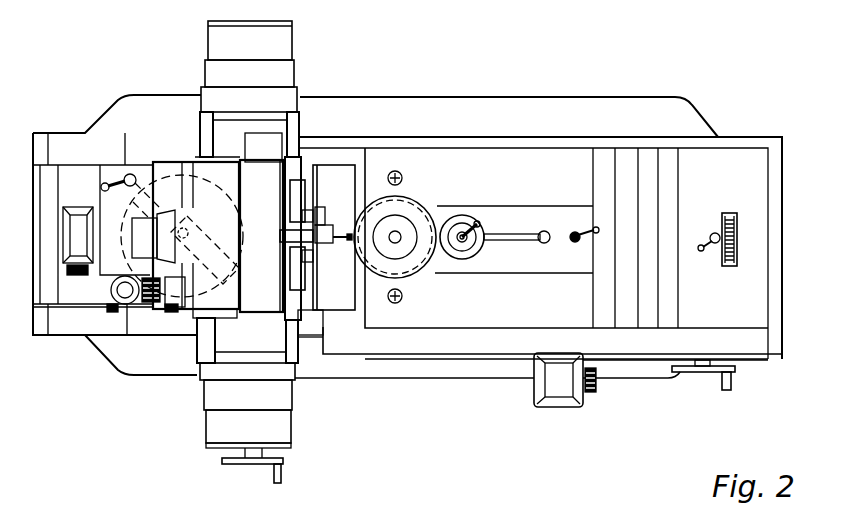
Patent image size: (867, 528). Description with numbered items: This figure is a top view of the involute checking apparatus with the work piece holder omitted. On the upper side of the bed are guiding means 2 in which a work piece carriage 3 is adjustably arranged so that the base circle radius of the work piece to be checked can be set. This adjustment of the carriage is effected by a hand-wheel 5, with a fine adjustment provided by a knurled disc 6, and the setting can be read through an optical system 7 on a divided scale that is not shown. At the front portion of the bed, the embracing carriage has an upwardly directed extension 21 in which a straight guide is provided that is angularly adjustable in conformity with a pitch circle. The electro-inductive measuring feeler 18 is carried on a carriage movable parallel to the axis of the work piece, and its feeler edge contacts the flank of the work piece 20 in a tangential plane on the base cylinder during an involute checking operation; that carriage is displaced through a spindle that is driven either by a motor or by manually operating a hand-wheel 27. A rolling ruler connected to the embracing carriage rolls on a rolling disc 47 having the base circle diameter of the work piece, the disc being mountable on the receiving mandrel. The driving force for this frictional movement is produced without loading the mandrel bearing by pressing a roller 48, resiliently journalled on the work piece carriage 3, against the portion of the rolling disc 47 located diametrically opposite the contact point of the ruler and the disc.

The guiding means 2 is at (528, 148).
The work piece carriage 3 is at (433, 158).
The hand-wheel 5 is at (731, 381).
The knurled disc 6 is at (731, 228).
The optical system 7 is at (565, 385).
The electro-inductive measuring feeler 18 is at (333, 232).
The work piece 20 is at (407, 209).
The upwardly directed extension 21 is at (274, 395).
The hand-wheel 27 is at (281, 473).
The rolling disc 47 is at (329, 181).
The roller 48 is at (458, 219).